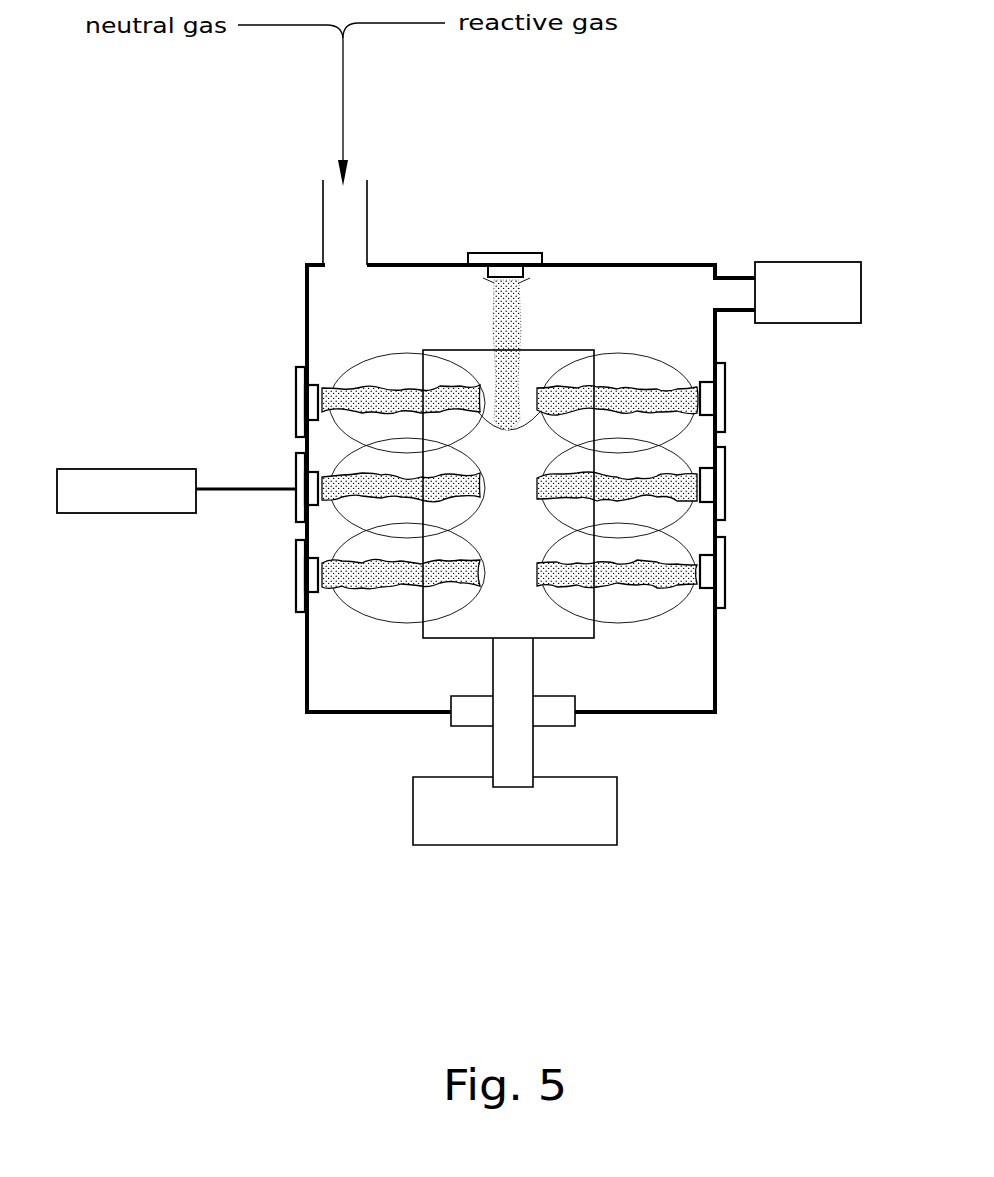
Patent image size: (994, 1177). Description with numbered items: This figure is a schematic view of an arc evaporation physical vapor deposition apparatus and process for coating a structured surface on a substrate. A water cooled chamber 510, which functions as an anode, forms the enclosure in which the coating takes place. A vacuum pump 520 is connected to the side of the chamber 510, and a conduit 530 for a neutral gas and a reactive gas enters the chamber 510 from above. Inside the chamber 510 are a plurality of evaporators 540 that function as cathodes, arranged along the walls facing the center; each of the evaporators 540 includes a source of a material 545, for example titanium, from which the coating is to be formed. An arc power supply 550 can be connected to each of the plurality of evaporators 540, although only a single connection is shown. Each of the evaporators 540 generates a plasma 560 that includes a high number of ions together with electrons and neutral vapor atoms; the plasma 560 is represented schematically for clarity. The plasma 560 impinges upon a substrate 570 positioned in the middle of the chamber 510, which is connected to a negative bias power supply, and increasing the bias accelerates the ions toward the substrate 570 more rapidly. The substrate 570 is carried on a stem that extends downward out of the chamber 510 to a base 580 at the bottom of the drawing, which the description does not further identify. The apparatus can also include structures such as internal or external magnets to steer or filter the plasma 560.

The water cooled chamber 510 is at (305, 658).
The vacuum pump 520 is at (785, 262).
The conduit 530 is at (368, 215).
The evaporators 540 is at (295, 385).
The source of a material 545 is at (712, 587).
The arc power supply 550 is at (135, 468).
The plasma 560 is at (692, 545).
The substrate 570 is at (442, 642).
The substrate drive base 580 is at (465, 847).